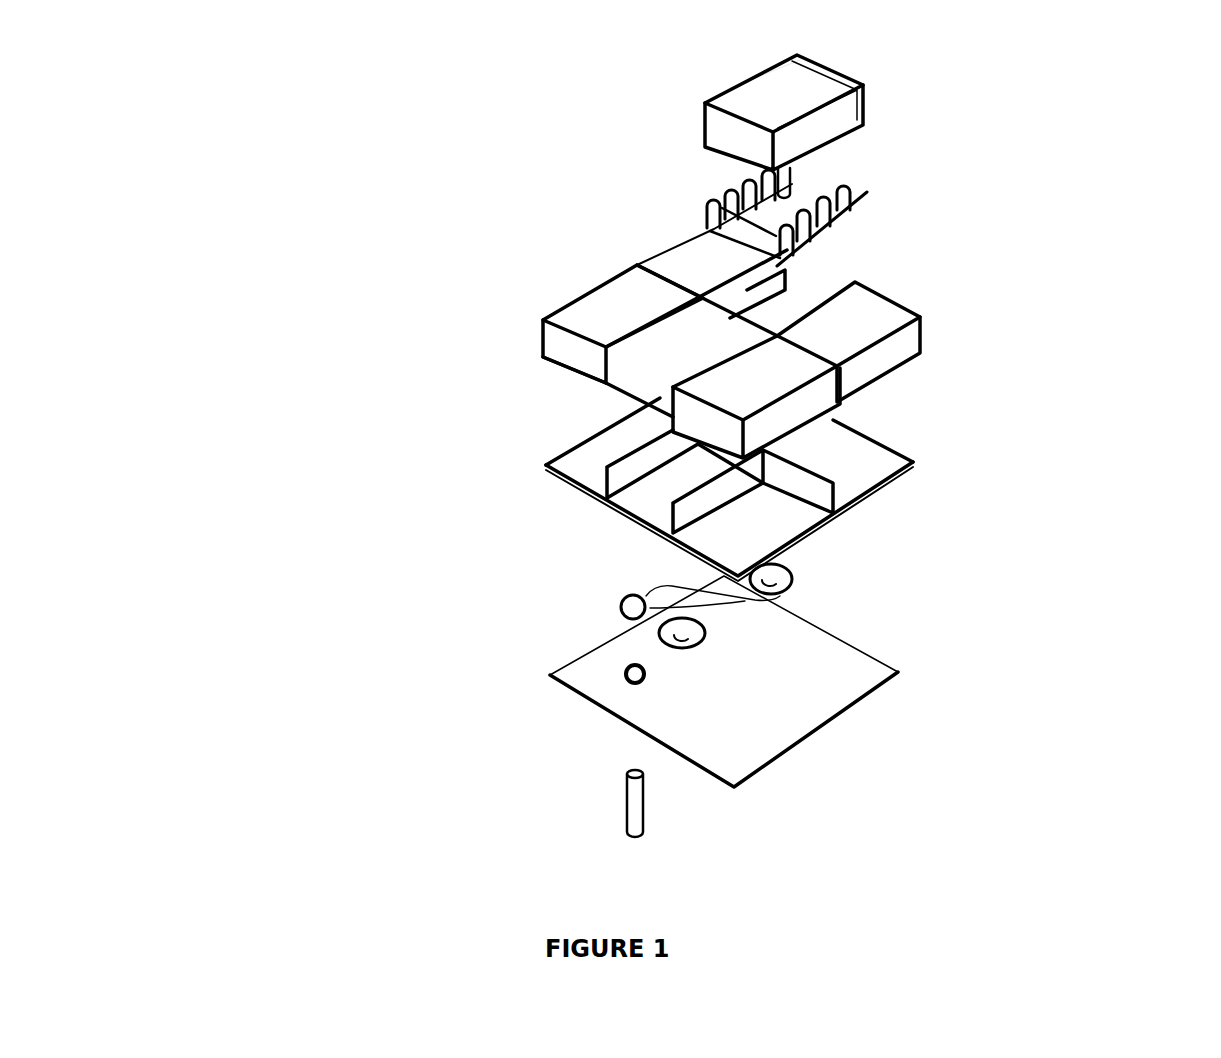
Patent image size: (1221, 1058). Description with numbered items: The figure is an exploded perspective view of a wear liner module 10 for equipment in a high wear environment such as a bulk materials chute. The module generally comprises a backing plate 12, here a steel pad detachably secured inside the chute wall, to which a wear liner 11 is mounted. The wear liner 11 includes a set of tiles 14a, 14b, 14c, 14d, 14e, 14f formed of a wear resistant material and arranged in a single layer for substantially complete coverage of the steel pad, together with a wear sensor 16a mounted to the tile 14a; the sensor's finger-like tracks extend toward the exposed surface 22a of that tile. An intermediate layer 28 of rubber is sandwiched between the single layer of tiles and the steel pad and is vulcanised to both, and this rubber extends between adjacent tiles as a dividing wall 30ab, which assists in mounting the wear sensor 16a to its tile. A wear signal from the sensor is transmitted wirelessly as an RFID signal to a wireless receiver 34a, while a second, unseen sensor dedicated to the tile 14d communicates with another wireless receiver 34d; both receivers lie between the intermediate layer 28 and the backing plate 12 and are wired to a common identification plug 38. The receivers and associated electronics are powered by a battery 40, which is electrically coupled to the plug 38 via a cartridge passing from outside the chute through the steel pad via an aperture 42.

The wear liner module 10 is at (343, 447).
The wear liner 11 is at (1027, 363).
The backing plate 12 is at (590, 682).
The wear resistant tile 14a is at (848, 112).
The wear resistant tile 14b is at (897, 349).
The wear resistant tile 14c is at (750, 397).
The wear resistant tile 14d is at (657, 363).
The wear resistant tile 14e is at (613, 317).
The wear resistant tile 14f is at (700, 258).
The wear sensor 16a is at (867, 193).
The exposed surface 22a is at (780, 100).
The intermediate layer 28 is at (912, 441).
The dividing wall 30ab is at (813, 434).
The wireless receiver 34a is at (793, 565).
The wireless receiver 34d is at (657, 654).
The identification plug 38 is at (620, 606).
The battery 40 is at (630, 817).
The aperture 42 is at (623, 687).